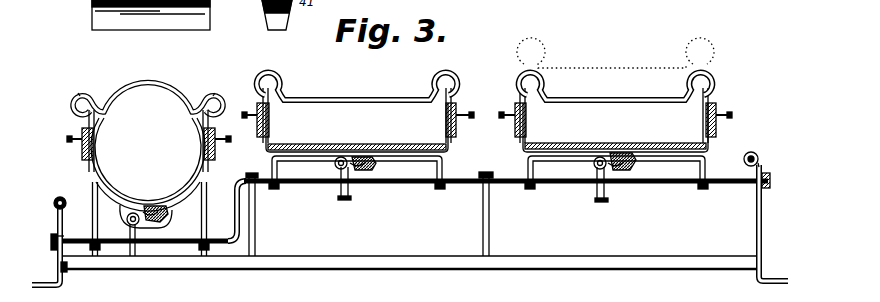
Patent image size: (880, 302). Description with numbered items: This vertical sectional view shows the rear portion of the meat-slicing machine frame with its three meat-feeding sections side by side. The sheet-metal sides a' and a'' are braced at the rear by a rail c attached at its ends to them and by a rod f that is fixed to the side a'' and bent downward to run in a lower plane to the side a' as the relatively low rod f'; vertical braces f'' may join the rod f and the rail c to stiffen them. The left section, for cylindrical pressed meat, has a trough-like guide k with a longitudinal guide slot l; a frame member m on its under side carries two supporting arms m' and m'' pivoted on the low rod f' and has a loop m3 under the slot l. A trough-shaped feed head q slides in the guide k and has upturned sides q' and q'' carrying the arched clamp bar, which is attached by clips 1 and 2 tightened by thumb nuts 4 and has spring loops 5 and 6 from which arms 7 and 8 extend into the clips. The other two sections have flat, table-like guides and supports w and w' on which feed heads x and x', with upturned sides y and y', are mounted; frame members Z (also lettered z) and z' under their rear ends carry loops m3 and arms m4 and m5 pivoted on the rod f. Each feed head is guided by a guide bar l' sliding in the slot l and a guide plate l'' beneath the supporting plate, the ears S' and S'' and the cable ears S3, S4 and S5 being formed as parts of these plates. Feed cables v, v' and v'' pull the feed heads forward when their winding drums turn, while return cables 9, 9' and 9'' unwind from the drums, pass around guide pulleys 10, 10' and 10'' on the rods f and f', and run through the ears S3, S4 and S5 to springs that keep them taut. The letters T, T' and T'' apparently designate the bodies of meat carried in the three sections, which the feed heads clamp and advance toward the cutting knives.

The drum T is at (148, 127).
The trough T' is at (357, 110).
The trough T'' is at (615, 95).
The clip 1 is at (82, 152).
The clip 2 is at (203, 150).
The thumb nut 4 is at (465, 104).
The spring loop 5 is at (78, 93).
The spring loop 6 is at (215, 93).
The arm 7 is at (84, 165).
The arm 8 is at (209, 165).
The cable 9 is at (148, 240).
The guide pulley 10 is at (118, 223).
The trough-like guide k is at (96, 177).
The feed head q is at (132, 178).
The upturned side q' is at (113, 122).
The upturned side q'' is at (181, 120).
The ear S3 is at (137, 188).
The guide slot l is at (244, 168).
The cable v is at (149, 218).
The frame member m is at (188, 237).
The supporting arm m' is at (87, 238).
The supporting arm m'' is at (241, 236).
The loop m3 is at (145, 250).
The arm m4 is at (280, 184).
The arm m5 is at (440, 190).
The side a' is at (40, 241).
The side a'' is at (766, 216).
The low rod f' is at (42, 232).
The vertical brace f'' is at (500, 214).
The rod f is at (448, 205).
The rail c is at (403, 267).
The upturned side y is at (297, 77).
The upturned side y' is at (414, 74).
The meat guide and support w is at (320, 131).
The guide plate l'' is at (358, 137).
The feed head x is at (389, 129).
The ear S4 is at (335, 168).
The cable v' is at (377, 166).
The cable 9' is at (329, 234).
The guide pulley 10' is at (369, 248).
The ear S' is at (367, 197).
The frame member Z is at (418, 168).
The meat guide and support w' is at (564, 129).
The frame member z is at (597, 133).
The guide bar l' is at (616, 136).
The feed head x' is at (637, 129).
The frame member z' is at (668, 129).
The ear S5 is at (592, 167).
The cable 9'' is at (601, 209).
The cable v'' is at (630, 181).
The ear S'' is at (656, 189).
The guide pulley 10'' is at (640, 217).